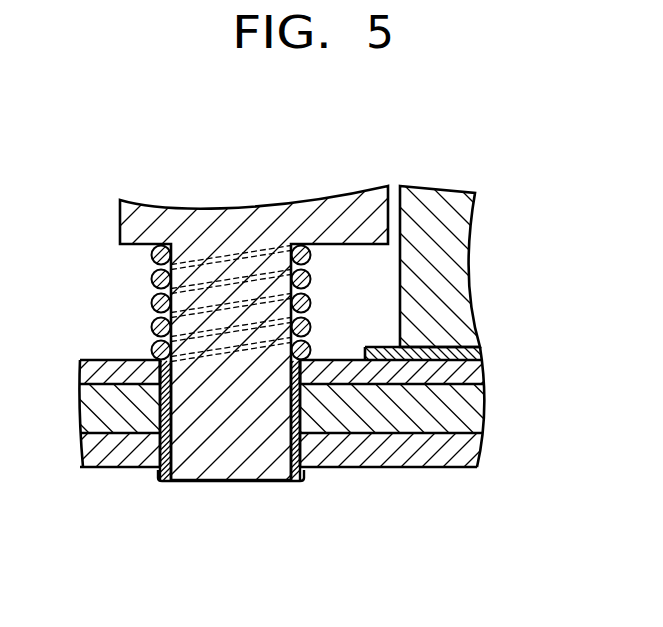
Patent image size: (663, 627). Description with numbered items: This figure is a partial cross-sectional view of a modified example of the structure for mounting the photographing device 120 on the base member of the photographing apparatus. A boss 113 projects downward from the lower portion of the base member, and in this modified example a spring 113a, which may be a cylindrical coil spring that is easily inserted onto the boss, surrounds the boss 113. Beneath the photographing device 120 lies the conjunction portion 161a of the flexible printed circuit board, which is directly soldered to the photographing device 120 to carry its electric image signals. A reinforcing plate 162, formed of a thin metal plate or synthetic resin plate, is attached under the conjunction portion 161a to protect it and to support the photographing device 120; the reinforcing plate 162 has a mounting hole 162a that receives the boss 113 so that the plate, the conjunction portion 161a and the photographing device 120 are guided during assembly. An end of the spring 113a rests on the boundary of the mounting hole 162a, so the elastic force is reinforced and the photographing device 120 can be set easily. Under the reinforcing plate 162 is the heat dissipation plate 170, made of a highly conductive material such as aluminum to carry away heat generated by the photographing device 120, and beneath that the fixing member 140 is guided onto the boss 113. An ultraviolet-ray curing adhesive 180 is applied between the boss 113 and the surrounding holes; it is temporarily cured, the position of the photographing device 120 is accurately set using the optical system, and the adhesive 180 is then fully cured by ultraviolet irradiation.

The boss 113 is at (222, 481).
The spring 113a is at (151, 303).
The photographing device 120 is at (445, 306).
The fixing member 140 is at (470, 458).
The conjunction portion 161a is at (470, 352).
The reinforcing plate 162 is at (468, 374).
The mounting hole 162a is at (291, 389).
The heat dissipation plate 170 is at (470, 410).
The adhesive 180 is at (160, 481).